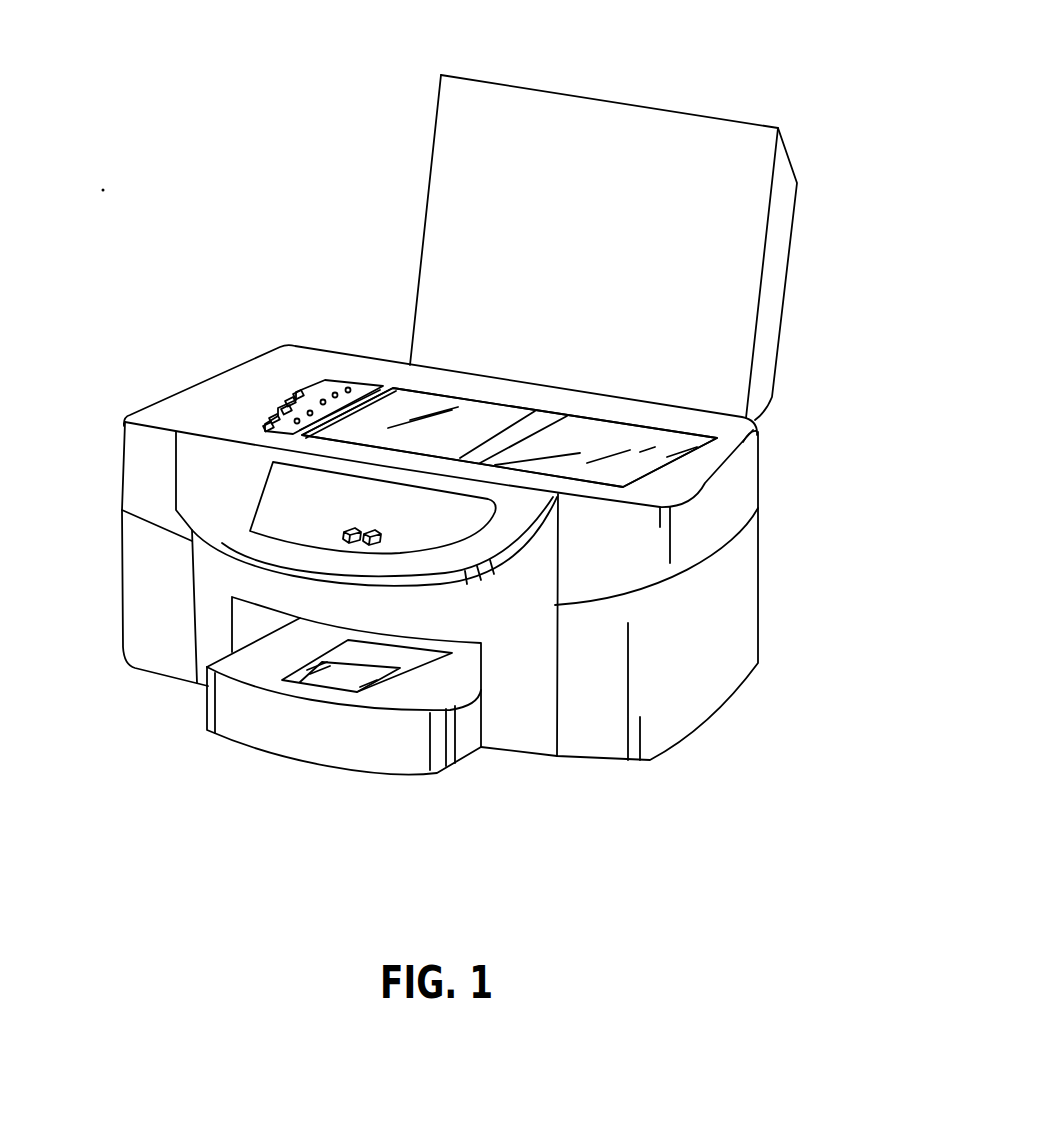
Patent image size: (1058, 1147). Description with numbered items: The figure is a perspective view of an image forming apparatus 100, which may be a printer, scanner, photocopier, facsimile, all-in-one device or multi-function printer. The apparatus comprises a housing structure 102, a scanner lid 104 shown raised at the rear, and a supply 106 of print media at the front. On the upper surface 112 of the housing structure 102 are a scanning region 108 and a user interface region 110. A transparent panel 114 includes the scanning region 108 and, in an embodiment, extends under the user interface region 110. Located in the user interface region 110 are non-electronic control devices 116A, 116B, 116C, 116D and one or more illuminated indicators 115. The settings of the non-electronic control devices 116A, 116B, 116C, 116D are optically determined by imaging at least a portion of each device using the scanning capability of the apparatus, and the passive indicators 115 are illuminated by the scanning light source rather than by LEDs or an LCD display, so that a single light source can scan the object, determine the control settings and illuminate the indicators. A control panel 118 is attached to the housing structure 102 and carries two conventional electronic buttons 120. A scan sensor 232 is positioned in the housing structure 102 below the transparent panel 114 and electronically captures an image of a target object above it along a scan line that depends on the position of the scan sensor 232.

The image forming apparatus 100 is at (737, 42).
The housing structure 102 is at (762, 595).
The scanner lid 104 is at (792, 158).
The supply of print media 106 is at (268, 735).
The scanning region 108 is at (617, 420).
The user interface region 110 is at (343, 334).
The upper surface 112 is at (710, 457).
The transparent panel 114 is at (673, 440).
The illuminated indicators 115 is at (358, 386).
The non-electronic control device 116A is at (272, 418).
The non-electronic control device 116B is at (267, 425).
The non-electronic control device 116C is at (300, 394).
The non-electronic control device 116D is at (288, 410).
The control panel 118 is at (265, 523).
The electronic buttons 120 is at (373, 527).
The scan sensor 232 is at (537, 418).